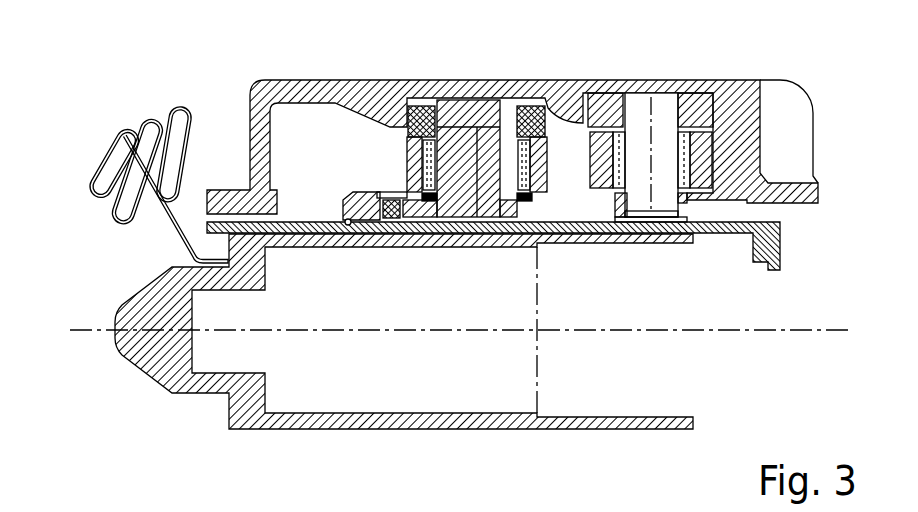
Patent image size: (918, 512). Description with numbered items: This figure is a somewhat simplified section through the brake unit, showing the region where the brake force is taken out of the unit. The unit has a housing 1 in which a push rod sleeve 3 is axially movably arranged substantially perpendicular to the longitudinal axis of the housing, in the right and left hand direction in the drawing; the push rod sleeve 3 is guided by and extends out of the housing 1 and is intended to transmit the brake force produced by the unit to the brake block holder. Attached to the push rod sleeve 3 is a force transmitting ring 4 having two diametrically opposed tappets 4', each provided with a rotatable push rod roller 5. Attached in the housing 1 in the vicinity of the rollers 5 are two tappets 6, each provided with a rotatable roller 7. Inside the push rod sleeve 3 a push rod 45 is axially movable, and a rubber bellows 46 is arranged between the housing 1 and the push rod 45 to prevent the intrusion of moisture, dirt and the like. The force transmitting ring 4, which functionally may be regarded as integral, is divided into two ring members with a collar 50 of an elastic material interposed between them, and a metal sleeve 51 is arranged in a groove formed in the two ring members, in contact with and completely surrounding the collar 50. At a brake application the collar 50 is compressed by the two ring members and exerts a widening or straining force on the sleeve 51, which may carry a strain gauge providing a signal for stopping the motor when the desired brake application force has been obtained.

The housing 1 is at (400, 90).
The push rod sleeve 3 is at (236, 222).
The force transmitting ring 4 is at (468, 108).
The tappet 4' is at (477, 116).
The push rod roller 5 is at (547, 165).
The tappet 6 is at (637, 123).
The roller 7 is at (696, 143).
The push rod 45 is at (157, 306).
The rubber bellows 46 is at (155, 113).
The collar 50 is at (350, 200).
The metal sleeve 51 is at (390, 193).